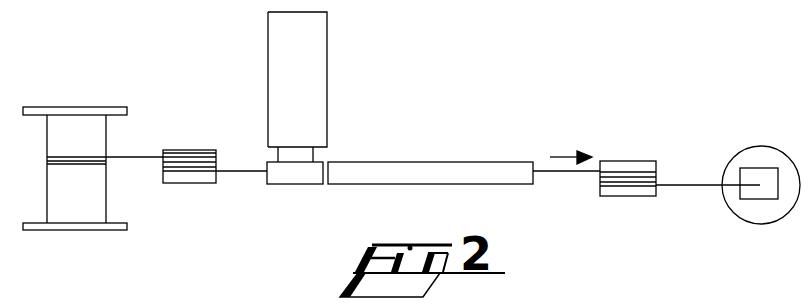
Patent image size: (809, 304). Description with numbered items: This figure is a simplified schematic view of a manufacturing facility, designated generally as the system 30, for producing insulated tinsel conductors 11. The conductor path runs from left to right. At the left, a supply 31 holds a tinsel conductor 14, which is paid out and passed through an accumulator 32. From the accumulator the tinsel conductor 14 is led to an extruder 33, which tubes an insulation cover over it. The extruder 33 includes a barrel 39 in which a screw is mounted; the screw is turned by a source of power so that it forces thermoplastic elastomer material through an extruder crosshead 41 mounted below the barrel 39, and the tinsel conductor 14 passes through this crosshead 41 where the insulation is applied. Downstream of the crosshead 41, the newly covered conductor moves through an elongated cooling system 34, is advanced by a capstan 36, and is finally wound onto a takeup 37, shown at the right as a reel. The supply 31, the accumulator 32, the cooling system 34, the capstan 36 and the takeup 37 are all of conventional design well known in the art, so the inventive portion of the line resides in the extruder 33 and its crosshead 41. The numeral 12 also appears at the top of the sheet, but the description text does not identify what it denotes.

The tinsel conductor 11 is at (683, 183).
The conductor 12 is at (568, 10).
The tinsel conductor 14 is at (238, 172).
The system 30 is at (430, 153).
The supply 31 is at (90, 107).
The accumulator 32 is at (192, 183).
The extruder 33 is at (332, 82).
The cooling system 34 is at (414, 186).
The capstan 36 is at (630, 197).
The takeup 37 is at (747, 226).
The barrel 39 is at (268, 83).
The extruder crosshead 41 is at (300, 186).